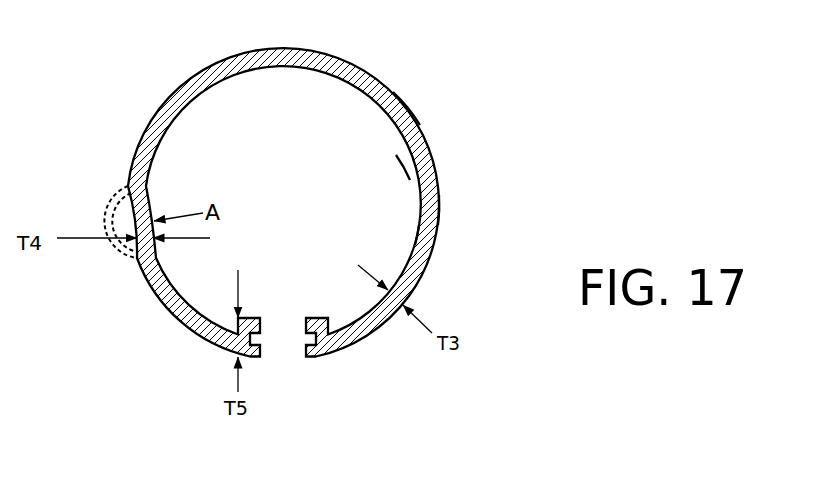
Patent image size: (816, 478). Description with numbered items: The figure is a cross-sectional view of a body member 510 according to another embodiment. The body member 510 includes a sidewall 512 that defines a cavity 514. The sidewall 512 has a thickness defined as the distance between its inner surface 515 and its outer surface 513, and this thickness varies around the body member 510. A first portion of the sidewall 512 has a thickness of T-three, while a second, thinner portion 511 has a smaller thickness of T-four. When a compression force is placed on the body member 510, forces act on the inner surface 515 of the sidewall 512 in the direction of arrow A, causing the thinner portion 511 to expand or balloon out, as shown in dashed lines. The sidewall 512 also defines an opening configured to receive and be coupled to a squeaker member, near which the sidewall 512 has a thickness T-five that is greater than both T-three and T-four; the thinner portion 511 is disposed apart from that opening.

The body member 510 is at (155, 45).
The portion 511 is at (118, 190).
The sidewall 512 is at (393, 92).
The outer surface 513 is at (440, 207).
The cavity 514 is at (373, 168).
The inner surface 515 is at (418, 235).